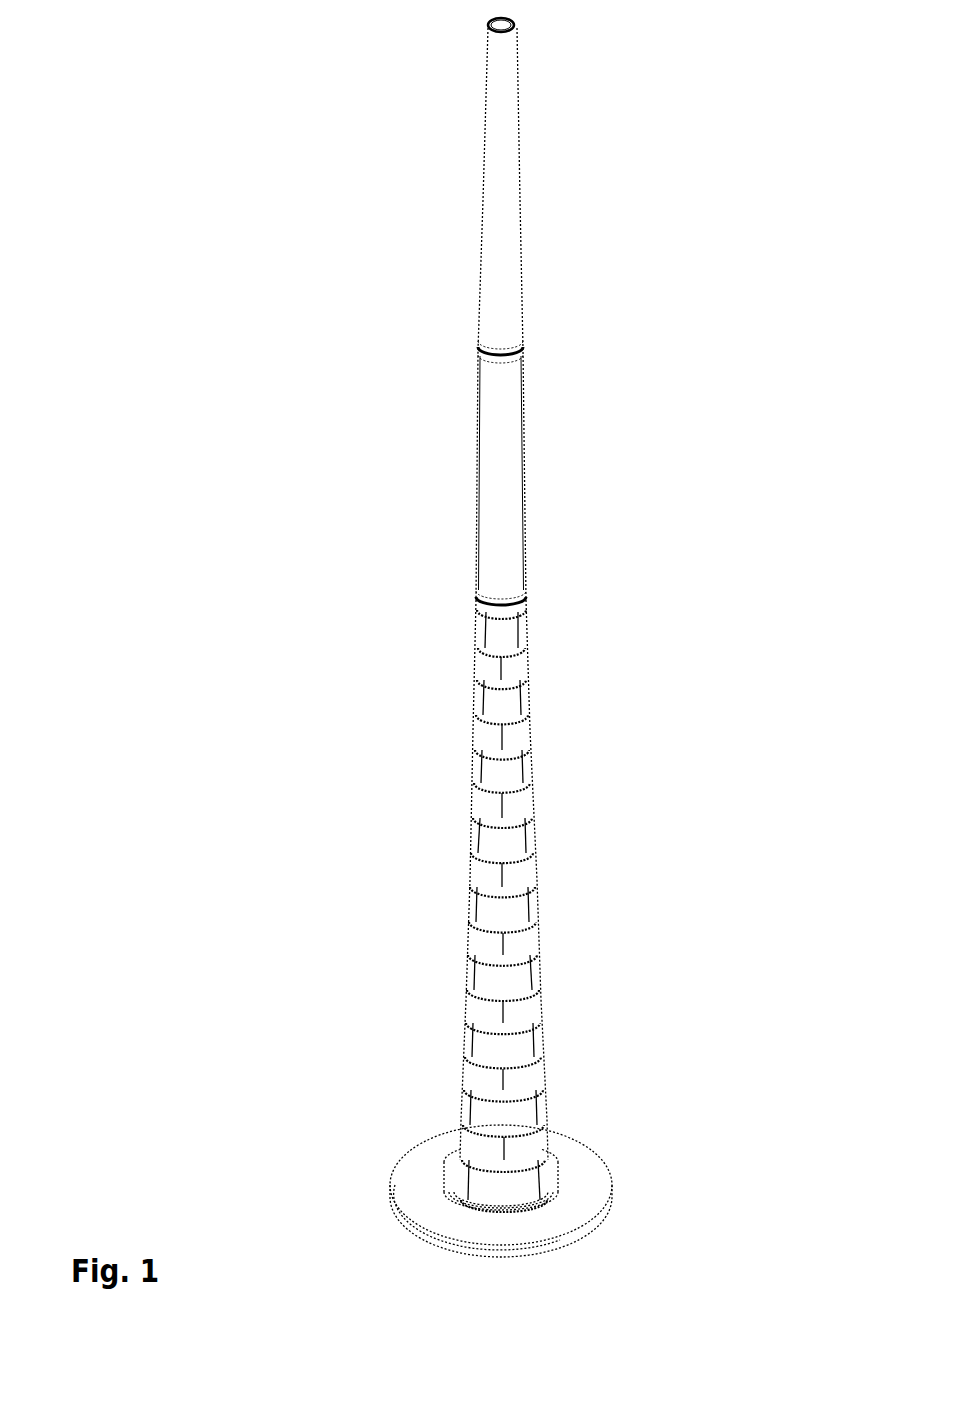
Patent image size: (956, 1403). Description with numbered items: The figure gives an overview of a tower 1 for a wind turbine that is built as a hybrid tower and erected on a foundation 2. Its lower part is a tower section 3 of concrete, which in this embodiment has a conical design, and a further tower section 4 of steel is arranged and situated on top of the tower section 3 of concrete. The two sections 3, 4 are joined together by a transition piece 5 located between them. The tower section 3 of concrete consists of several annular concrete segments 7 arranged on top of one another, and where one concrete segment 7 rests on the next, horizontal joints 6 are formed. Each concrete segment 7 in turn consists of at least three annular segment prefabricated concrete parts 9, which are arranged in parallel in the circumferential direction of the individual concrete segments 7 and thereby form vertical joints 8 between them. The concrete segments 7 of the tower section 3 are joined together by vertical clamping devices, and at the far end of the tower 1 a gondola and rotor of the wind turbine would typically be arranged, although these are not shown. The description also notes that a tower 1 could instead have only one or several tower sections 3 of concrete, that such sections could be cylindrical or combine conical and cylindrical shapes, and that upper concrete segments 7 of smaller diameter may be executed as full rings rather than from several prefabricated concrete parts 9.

The tower 1 is at (298, 295).
The foundation 2 is at (434, 1182).
The tower section of concrete 3 is at (619, 875).
The tower section of steel 4 is at (627, 361).
The transition piece 5 is at (491, 604).
The horizontal joints 6 is at (466, 944).
The concrete segments 7 is at (553, 1003).
The vertical joints 8 is at (502, 732).
The prefabricated concrete parts 9 is at (500, 907).